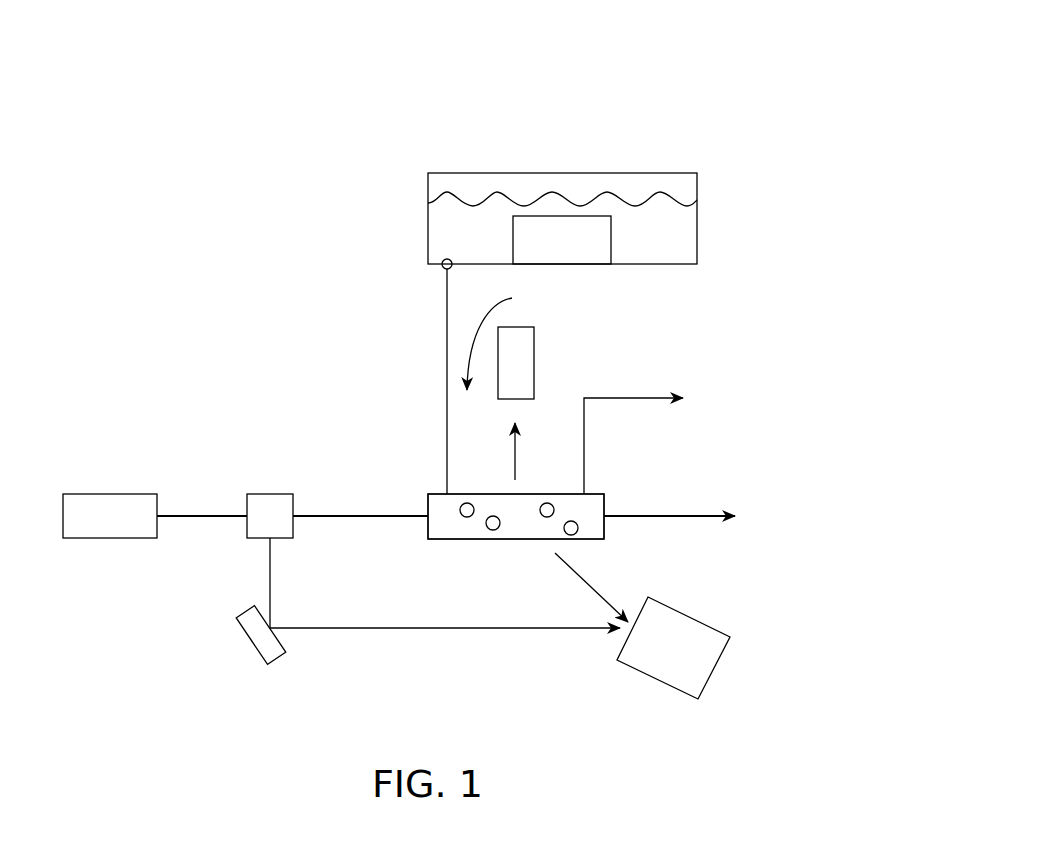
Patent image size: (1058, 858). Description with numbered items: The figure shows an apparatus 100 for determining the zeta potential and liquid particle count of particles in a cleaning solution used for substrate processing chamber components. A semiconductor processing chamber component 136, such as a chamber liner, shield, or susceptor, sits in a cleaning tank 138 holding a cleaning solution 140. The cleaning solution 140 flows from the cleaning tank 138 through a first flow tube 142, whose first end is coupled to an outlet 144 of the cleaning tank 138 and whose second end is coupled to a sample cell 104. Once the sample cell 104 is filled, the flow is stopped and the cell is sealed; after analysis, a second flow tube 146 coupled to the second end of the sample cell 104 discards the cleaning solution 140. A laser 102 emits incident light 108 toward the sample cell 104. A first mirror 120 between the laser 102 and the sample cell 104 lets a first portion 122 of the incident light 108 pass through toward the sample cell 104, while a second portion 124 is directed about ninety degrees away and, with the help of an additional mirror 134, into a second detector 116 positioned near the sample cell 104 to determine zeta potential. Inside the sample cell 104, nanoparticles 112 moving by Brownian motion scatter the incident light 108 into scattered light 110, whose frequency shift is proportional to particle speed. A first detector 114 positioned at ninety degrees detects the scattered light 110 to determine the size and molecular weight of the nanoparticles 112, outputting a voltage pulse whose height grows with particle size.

The apparatus 100 is at (697, 60).
The laser 102 is at (110, 494).
The sample cell 104 is at (604, 498).
The incident light 108 is at (200, 512).
The scattered light 110 is at (512, 452).
The nanoparticles 112 is at (547, 503).
The first detector 114 is at (535, 362).
The second detector 116 is at (690, 612).
The first mirror 120 is at (268, 494).
The first portion of the incident light 122 is at (342, 512).
The second portion of the incident light 124 is at (467, 630).
The additional mirror 134 is at (248, 643).
The semiconductor processing chamber component 136 is at (562, 240).
The cleaning tank 138 is at (562, 173).
The cleaning solution 140 is at (684, 236).
The first flow tube 142 is at (447, 345).
The outlet 144 is at (438, 278).
The second flow tube 146 is at (656, 440).